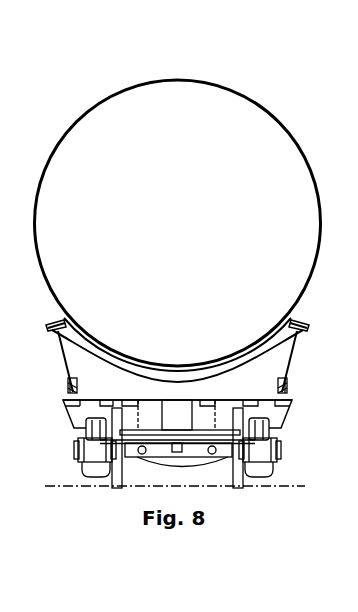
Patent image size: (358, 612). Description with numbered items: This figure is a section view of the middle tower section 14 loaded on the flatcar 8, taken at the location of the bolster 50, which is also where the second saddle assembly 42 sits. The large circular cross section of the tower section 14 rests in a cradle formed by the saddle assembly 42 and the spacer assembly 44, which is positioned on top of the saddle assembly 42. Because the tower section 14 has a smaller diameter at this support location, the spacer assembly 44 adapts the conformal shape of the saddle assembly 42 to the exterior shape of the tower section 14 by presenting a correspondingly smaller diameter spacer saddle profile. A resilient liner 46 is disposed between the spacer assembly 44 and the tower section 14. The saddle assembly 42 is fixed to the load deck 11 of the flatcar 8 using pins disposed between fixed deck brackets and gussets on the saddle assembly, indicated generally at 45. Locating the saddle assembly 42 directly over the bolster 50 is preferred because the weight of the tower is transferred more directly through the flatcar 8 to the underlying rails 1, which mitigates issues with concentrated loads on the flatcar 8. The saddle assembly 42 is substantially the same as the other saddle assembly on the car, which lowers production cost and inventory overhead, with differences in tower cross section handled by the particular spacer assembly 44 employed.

The rails 1 is at (67, 485).
The flatcar 8 is at (67, 413).
The load deck 11 is at (254, 398).
The middle tower section 14 is at (231, 88).
The second saddle assembly 42 is at (63, 364).
The spacer assembly 44 is at (281, 347).
The pins, deck brackets and gussets 45 is at (68, 390).
The resilient liner 46 is at (55, 321).
The bolster 50 is at (78, 446).